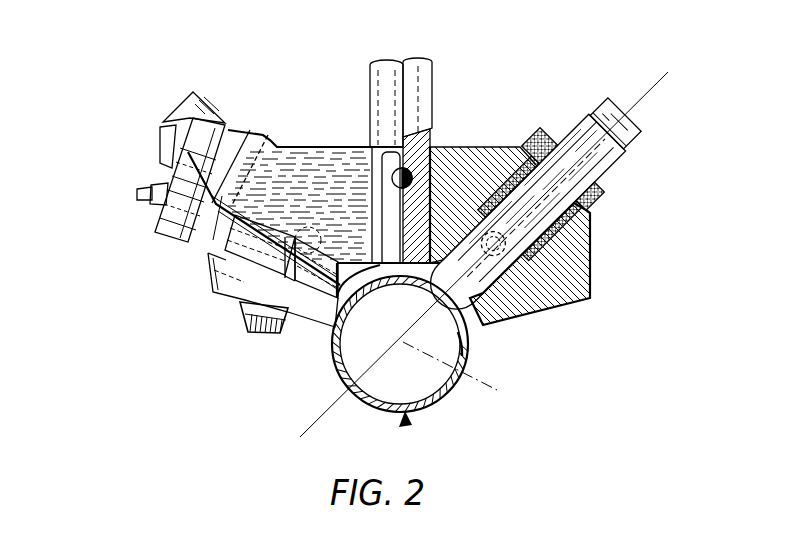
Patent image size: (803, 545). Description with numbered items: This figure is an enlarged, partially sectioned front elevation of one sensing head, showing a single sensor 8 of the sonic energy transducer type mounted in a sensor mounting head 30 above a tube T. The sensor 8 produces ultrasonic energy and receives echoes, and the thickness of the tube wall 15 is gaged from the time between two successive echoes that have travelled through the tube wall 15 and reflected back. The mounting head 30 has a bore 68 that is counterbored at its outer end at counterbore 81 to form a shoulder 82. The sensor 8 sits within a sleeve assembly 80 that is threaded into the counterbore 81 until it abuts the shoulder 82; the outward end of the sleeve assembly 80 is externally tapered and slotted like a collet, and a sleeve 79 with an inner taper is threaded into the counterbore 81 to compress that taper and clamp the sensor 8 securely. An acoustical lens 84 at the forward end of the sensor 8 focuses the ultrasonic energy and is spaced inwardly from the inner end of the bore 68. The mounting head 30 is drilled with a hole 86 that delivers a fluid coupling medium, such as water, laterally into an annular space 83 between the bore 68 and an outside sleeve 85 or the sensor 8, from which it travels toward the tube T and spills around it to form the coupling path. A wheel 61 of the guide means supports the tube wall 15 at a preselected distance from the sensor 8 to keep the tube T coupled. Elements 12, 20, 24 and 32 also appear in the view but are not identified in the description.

The sensor 8 is at (590, 105).
The valve cap 12 is at (620, 148).
The tube wall 15 is at (443, 395).
The pipe ring 20 is at (470, 375).
The shaft 24 is at (385, 90).
The sensor mounting head 30 is at (308, 135).
The shaft 32 is at (418, 90).
The wheel 61 is at (240, 318).
The bore 68 is at (470, 250).
The sleeve 79 is at (603, 195).
The sleeve assembly 80 is at (537, 142).
The counterbore 81 is at (590, 232).
The shoulder 82 is at (558, 247).
The annular space 83 is at (572, 307).
The acoustical lens 84 is at (467, 343).
The outside sleeve 85 is at (452, 200).
The hole 86 is at (505, 270).
The tube T is at (408, 420).